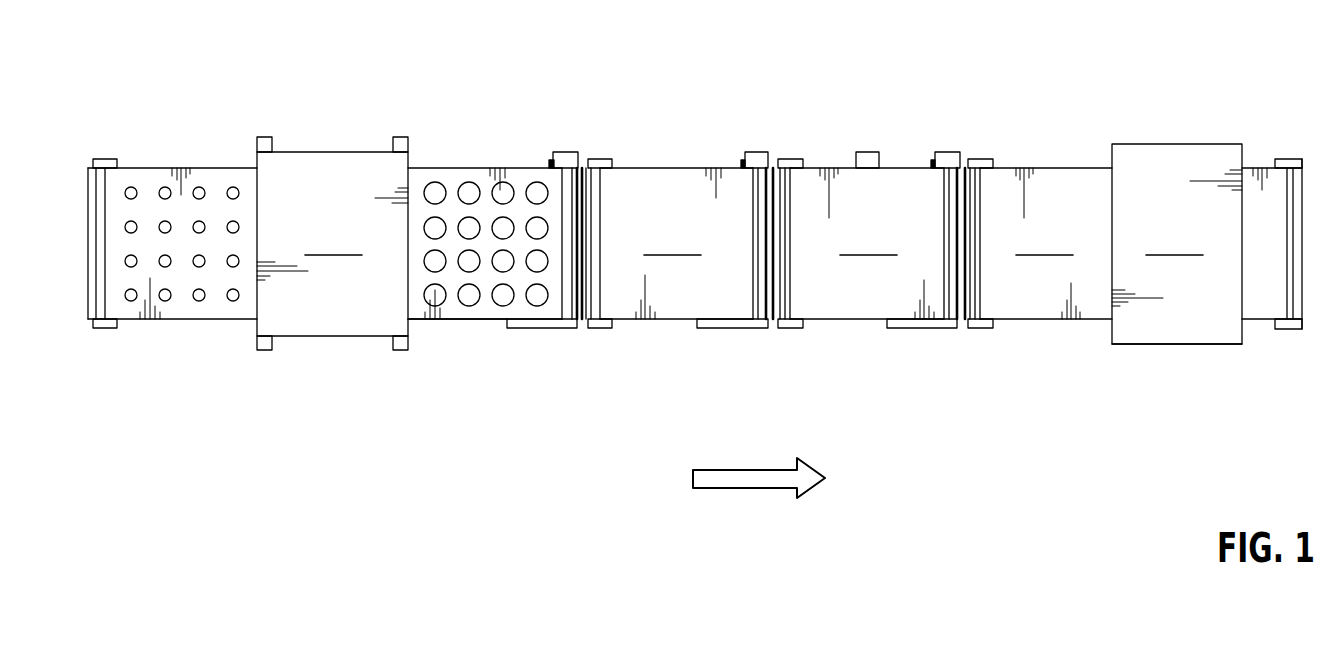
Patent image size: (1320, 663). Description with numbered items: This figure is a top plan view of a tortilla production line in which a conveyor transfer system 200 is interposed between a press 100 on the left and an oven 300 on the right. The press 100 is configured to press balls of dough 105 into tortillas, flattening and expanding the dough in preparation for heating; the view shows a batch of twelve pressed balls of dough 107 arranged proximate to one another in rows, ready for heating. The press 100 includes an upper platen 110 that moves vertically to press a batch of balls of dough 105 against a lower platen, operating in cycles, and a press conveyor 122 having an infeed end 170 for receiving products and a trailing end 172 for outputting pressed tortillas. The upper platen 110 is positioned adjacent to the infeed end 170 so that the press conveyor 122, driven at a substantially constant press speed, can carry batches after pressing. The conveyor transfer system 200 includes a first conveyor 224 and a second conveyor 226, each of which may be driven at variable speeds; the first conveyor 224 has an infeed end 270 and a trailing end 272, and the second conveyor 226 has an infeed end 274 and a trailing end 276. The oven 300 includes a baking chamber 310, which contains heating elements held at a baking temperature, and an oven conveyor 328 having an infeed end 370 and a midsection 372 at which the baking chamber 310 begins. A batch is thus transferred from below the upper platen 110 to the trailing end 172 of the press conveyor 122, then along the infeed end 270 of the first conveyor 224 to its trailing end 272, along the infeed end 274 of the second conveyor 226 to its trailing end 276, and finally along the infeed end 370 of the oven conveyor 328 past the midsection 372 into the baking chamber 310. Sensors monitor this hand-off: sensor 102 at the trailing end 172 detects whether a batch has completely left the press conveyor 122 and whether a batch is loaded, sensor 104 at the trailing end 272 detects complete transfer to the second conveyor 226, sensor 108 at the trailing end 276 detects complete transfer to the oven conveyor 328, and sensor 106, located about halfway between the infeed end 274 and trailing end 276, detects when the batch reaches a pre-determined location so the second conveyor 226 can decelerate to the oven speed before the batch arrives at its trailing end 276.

The press 100 is at (328, 70).
The balls of dough 105 is at (133, 190).
The pressed balls of dough 107 is at (436, 191).
The upper platen 110 is at (332, 243).
The press conveyor 122 is at (472, 365).
The infeed end 170 is at (412, 350).
The sensor 102 is at (560, 152).
The sensor 104 is at (757, 152).
The sensor 106 is at (868, 152).
The sensor 108 is at (948, 152).
The infeed end 270 is at (584, 298).
The trailing end 172 is at (574, 308).
The infeed end 274 is at (771, 298).
The trailing end 272 is at (770, 308).
The infeed end 370 is at (962, 298).
The trailing end 276 is at (961, 308).
The conveyor transfer system 200 is at (906, 85).
The first conveyor 224 is at (676, 243).
The second conveyor 226 is at (867, 243).
The oven 300 is at (1178, 85).
The oven conveyor 328 is at (1046, 243).
The baking chamber 310 is at (1177, 244).
The midsection 372 is at (1112, 344).